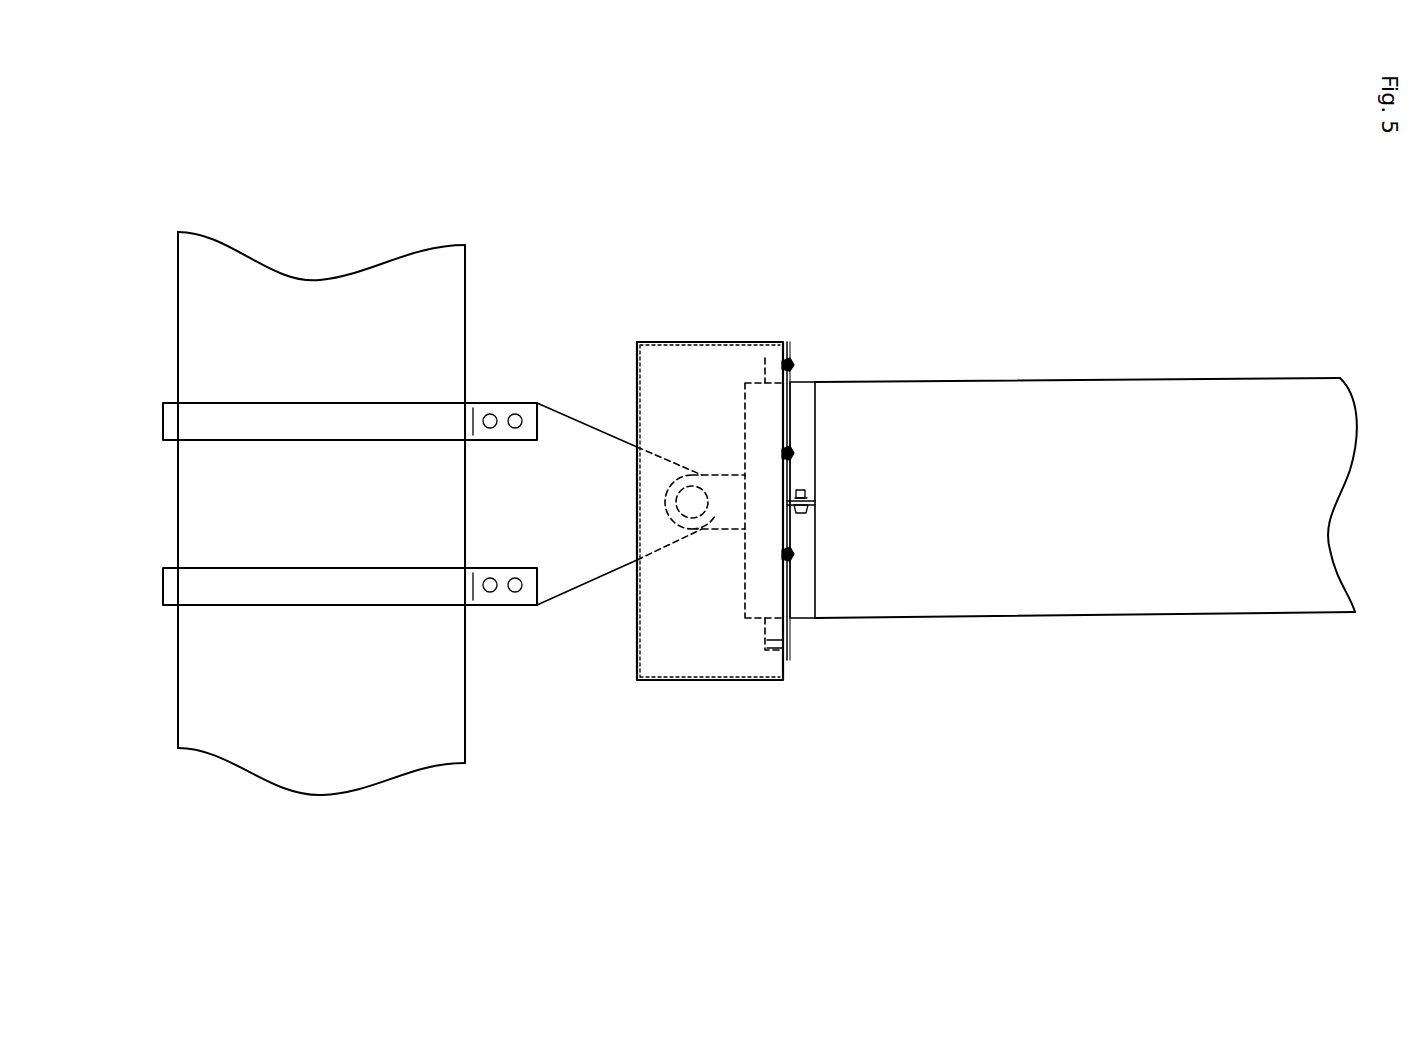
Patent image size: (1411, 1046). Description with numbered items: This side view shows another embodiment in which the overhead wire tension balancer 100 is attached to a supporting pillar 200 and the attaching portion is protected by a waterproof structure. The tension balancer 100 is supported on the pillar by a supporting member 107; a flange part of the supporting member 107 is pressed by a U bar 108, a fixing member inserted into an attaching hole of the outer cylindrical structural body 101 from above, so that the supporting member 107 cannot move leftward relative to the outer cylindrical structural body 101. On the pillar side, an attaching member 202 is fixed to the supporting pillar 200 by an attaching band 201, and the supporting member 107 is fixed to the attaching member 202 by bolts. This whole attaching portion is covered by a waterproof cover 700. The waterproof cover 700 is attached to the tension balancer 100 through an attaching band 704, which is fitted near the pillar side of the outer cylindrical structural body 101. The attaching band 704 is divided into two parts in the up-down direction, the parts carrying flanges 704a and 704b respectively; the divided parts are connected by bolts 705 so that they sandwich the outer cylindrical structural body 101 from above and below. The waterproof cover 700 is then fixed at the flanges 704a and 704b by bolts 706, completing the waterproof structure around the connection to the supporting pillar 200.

The overhead wire tension balancer 100 is at (1140, 380).
The outer cylindrical structural body 101 is at (1254, 398).
The supporting member 107 is at (725, 512).
The U bar 108 is at (782, 364).
The supporting pillar 200 is at (188, 335).
The attaching band 201 is at (172, 430).
The attaching member 202 is at (585, 572).
The waterproof cover 700 is at (694, 342).
The attaching band 704 is at (818, 430).
The flange 704a is at (790, 406).
The flange 704b is at (792, 643).
The bolts 705 is at (797, 485).
The bolts 706 is at (792, 553).